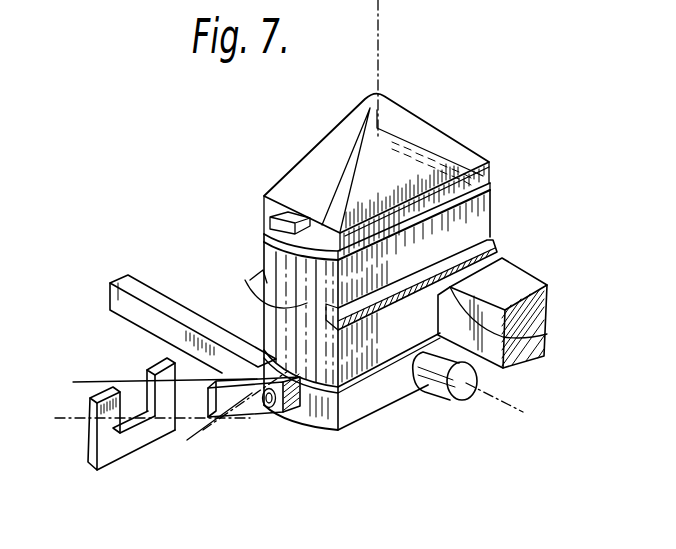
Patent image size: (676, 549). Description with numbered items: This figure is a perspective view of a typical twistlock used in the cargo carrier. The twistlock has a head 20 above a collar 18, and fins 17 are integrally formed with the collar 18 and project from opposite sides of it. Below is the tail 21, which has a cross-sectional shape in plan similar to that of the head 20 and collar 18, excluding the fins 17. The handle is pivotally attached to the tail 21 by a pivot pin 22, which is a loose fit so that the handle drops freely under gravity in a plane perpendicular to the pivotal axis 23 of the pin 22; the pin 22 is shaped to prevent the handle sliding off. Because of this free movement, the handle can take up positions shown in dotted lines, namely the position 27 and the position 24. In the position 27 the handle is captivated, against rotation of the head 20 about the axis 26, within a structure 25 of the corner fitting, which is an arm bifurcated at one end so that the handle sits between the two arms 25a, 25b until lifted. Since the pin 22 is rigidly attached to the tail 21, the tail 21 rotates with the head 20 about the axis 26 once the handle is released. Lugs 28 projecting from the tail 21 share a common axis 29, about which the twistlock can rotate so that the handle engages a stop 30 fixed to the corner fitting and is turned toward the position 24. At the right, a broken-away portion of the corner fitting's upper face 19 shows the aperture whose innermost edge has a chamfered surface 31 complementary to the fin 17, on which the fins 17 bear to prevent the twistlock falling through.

The fins 17 is at (487, 248).
The collar 18 is at (483, 204).
The upper face of corner fitting 19 is at (527, 279).
The head 20 is at (420, 118).
The tail 21 is at (358, 413).
The pivot pin 22 is at (268, 405).
The pivotal axis 23 is at (208, 431).
The handle position 24 is at (263, 258).
The structure 25 is at (94, 422).
The arm 25a is at (70, 418).
The arm 25b is at (157, 367).
The axis 26 is at (381, 33).
The handle position 27 is at (81, 387).
The lugs 28 is at (460, 394).
The axis 29 is at (508, 406).
The stop 30 is at (207, 407).
The chamfered surface 31 is at (535, 342).